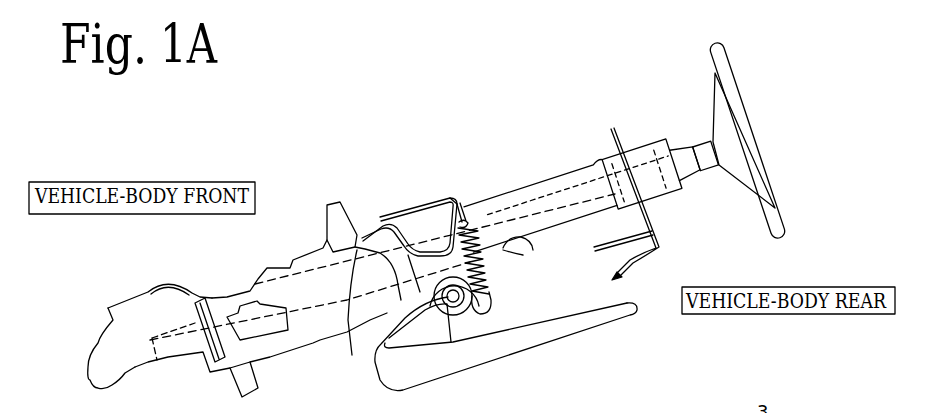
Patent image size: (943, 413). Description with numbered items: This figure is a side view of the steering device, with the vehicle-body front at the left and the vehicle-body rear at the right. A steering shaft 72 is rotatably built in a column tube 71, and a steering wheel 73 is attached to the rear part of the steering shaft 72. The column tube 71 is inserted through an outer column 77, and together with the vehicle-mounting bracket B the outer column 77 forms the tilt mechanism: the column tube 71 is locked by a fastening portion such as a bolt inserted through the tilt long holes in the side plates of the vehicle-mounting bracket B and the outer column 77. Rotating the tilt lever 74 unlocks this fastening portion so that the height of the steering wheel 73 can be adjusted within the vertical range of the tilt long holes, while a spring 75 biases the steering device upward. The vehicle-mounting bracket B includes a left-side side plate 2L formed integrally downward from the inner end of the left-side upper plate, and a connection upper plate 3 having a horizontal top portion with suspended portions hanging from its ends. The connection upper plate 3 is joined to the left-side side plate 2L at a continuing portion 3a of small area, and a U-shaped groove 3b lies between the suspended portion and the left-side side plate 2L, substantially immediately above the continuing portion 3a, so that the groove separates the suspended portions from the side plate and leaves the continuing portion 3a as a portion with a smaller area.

The connection upper plate 3 is at (321, 238).
The continuing portion 3a is at (353, 313).
The U-shaped groove 3b is at (355, 246).
The column tube 71 is at (549, 177).
The steering shaft 72 is at (340, 303).
The steering wheel 73 is at (771, 204).
The tilt lever 74 is at (556, 340).
The spring 75 is at (532, 244).
The outer column 77 is at (478, 200).
The vehicle-mounting bracket B is at (451, 197).
The left-side side plate 2L is at (482, 281).